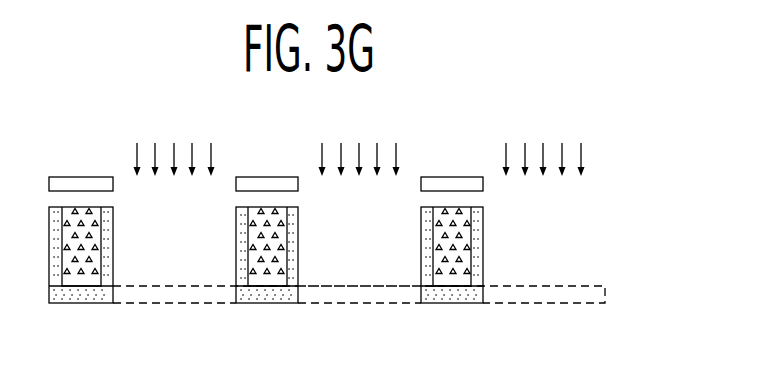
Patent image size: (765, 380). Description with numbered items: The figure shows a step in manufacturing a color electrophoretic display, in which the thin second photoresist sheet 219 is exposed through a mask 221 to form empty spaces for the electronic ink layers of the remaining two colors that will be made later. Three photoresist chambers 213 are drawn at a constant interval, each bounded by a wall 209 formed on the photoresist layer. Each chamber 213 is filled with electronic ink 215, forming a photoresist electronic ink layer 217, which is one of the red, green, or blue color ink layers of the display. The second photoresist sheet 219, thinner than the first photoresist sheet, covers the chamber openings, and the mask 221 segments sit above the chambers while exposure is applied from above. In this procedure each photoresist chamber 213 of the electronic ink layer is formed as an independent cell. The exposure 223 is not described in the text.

The wall 209 is at (482, 219).
The photoresist chamber 213 is at (485, 272).
The electronic ink 215 is at (450, 218).
The second photoresist sheet 219 is at (465, 303).
The mask 221 is at (435, 178).
The ion implantation process 223 is at (582, 148).
The photoresist electronic ink layer 217 is at (553, 238).